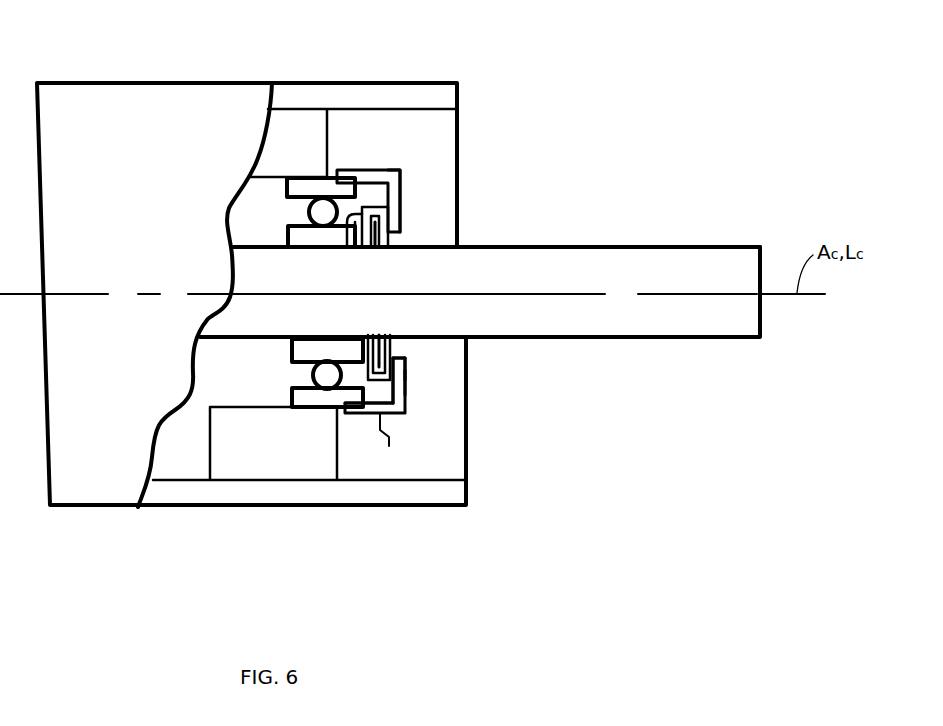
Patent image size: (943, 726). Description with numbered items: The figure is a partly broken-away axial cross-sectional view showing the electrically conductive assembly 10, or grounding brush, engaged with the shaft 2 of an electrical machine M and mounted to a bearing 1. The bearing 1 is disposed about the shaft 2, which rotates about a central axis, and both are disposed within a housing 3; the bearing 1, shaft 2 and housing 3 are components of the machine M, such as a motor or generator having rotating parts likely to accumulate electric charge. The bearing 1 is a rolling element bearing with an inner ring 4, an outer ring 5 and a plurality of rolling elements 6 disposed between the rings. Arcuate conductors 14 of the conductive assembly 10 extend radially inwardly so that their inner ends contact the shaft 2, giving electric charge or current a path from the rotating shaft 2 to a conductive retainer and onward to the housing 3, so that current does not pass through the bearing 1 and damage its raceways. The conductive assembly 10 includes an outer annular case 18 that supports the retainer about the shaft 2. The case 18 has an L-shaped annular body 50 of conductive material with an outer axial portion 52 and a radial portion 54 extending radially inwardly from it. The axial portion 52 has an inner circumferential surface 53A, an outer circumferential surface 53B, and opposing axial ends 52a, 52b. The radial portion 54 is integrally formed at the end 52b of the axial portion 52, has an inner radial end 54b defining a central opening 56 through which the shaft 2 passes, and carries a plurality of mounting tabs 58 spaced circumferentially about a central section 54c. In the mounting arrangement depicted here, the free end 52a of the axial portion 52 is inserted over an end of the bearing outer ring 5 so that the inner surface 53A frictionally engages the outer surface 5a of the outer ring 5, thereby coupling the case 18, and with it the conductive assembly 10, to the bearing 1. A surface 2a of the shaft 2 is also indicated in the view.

The bearing 1 is at (258, 216).
The shaft 2 is at (722, 342).
The outer peripheral surface of shaft 2a is at (700, 247).
The housing 3 is at (289, 72).
The inner ring 4 is at (310, 236).
The outer ring 5 is at (308, 181).
The outer surface of the outer ring 5a is at (313, 408).
The rolling elements 6 is at (305, 212).
The electrically conductive assembly 10 is at (441, 207).
The arcuate conductors 14 is at (403, 238).
The case 18 is at (410, 431).
The L-shaped annular body 50 is at (404, 159).
The outer axial portion 52 is at (371, 163).
The free end of the axial portion 52a is at (347, 417).
The end of the axial portion 52b is at (407, 413).
The inner circumferential surface 53A is at (394, 366).
The outer circumferential surface 53B is at (391, 442).
The radial portion 54 is at (403, 188).
The inner radial end 54b is at (406, 362).
The central section 54c is at (407, 378).
The central opening 56 is at (396, 353).
The mounting tabs 58 is at (347, 243).
The electrical machine M is at (506, 38).